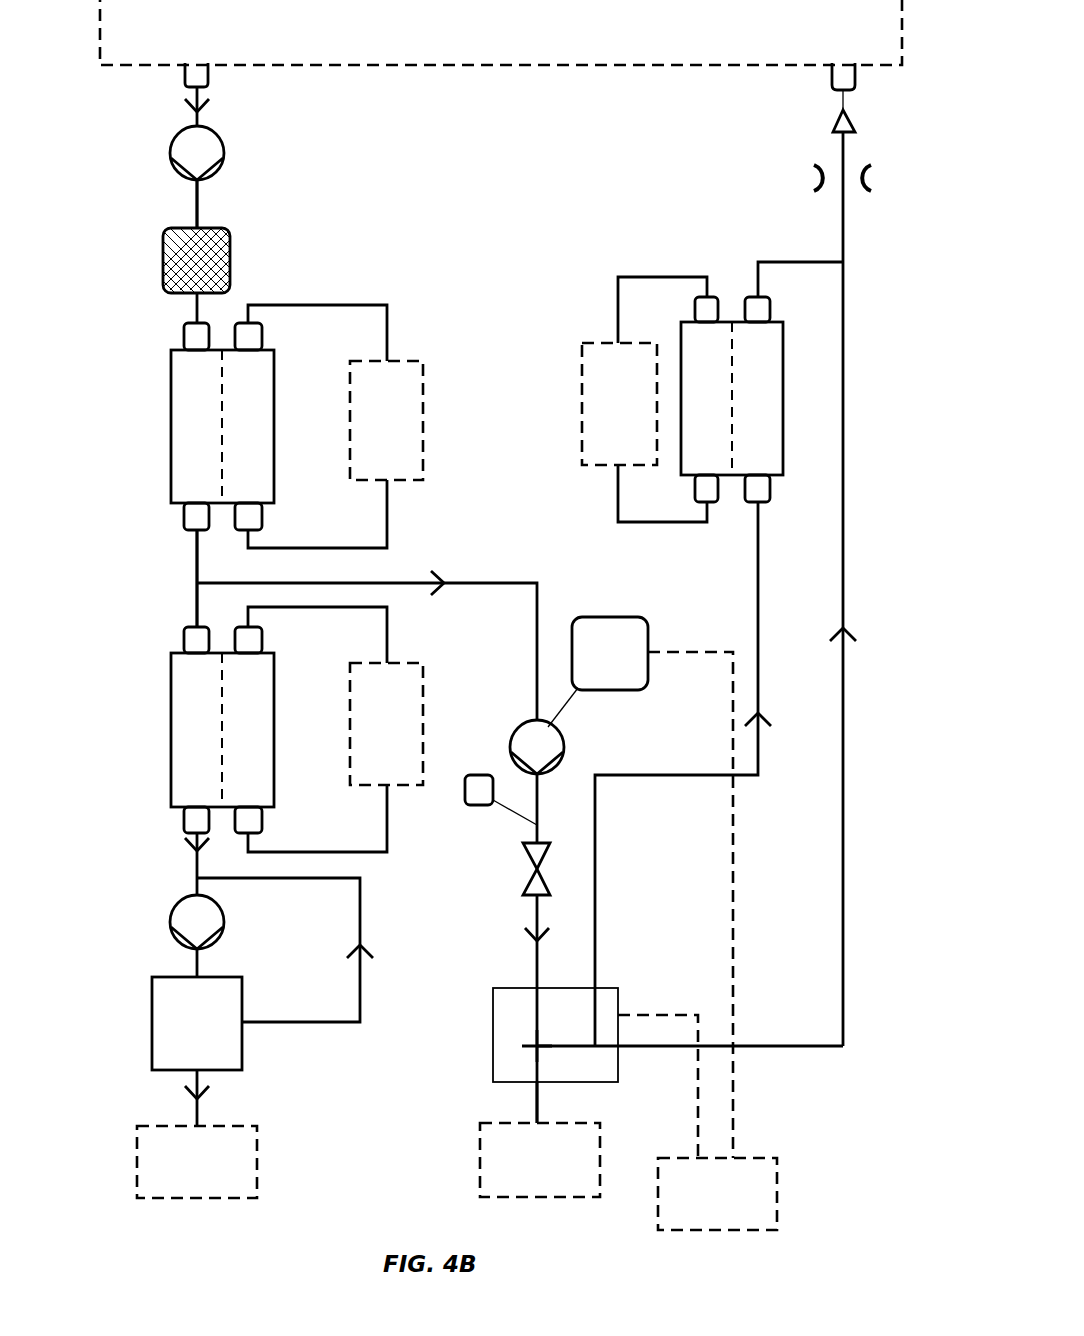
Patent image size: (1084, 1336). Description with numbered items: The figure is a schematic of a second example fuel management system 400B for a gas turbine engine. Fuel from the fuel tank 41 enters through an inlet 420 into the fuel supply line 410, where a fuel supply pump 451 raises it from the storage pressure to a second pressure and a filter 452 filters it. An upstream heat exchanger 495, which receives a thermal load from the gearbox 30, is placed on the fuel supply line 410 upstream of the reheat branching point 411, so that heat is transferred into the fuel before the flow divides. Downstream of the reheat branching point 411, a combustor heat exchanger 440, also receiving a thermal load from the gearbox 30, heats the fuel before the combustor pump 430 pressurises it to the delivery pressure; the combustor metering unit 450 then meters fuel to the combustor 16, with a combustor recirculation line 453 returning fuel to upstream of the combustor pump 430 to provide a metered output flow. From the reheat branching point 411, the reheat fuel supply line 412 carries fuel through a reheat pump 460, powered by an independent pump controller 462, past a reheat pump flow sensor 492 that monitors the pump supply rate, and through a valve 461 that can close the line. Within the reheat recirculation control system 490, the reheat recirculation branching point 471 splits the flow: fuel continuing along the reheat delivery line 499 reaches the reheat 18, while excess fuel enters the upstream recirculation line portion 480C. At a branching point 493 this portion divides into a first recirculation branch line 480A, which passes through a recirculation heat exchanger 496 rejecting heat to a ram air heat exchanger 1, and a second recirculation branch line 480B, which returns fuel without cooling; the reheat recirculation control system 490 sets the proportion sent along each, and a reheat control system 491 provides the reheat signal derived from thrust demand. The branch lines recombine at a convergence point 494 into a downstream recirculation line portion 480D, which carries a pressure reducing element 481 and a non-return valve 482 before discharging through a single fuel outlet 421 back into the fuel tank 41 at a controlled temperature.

The second example fuel management system 400B is at (848, 1118).
The fuel tank 41 is at (501, 32).
The inlet 420 is at (185, 68).
The fuel supply pump 451 is at (223, 153).
The fuel supply line 410 is at (197, 193).
The filter 452 is at (230, 245).
The upstream heat exchanger 495 is at (171, 410).
The gearbox 30 is at (386, 573).
The reheat fuel supply line 412 is at (518, 582).
The reheat branching point 411 is at (160, 550).
The combustor heat exchanger 440 is at (171, 757).
The combustor pump 430 is at (171, 930).
The combustor recirculation line 453 is at (360, 978).
The combustor metering unit 450 is at (152, 1045).
The combustor 16 is at (197, 1162).
The independent pump controller 462 is at (628, 617).
The reheat pump flow sensor 492 is at (465, 792).
The reheat pump 460 is at (563, 733).
The valve 461 is at (527, 867).
The first recirculation branch line 480A is at (595, 885).
The reheat recirculation control system 490 is at (493, 1015).
The reheat recirculation branching point 471 is at (537, 1047).
The reheat delivery line 499 is at (537, 1100).
The branching point 493 is at (618, 1015).
The upstream recirculation line portion 480C is at (560, 1048).
The reheat 18 is at (540, 1160).
The reheat control system 491 is at (717, 1194).
The fuel outlet 421 is at (832, 85).
The non-return valve 482 is at (836, 128).
The pressure reducing element 481 is at (820, 178).
The downstream recirculation line portion 480D is at (843, 223).
The second recirculation branch line 480B is at (843, 915).
The convergence point 494 is at (843, 263).
The recirculation heat exchanger 496 is at (783, 390).
The ram air heat exchanger 1 is at (619, 404).